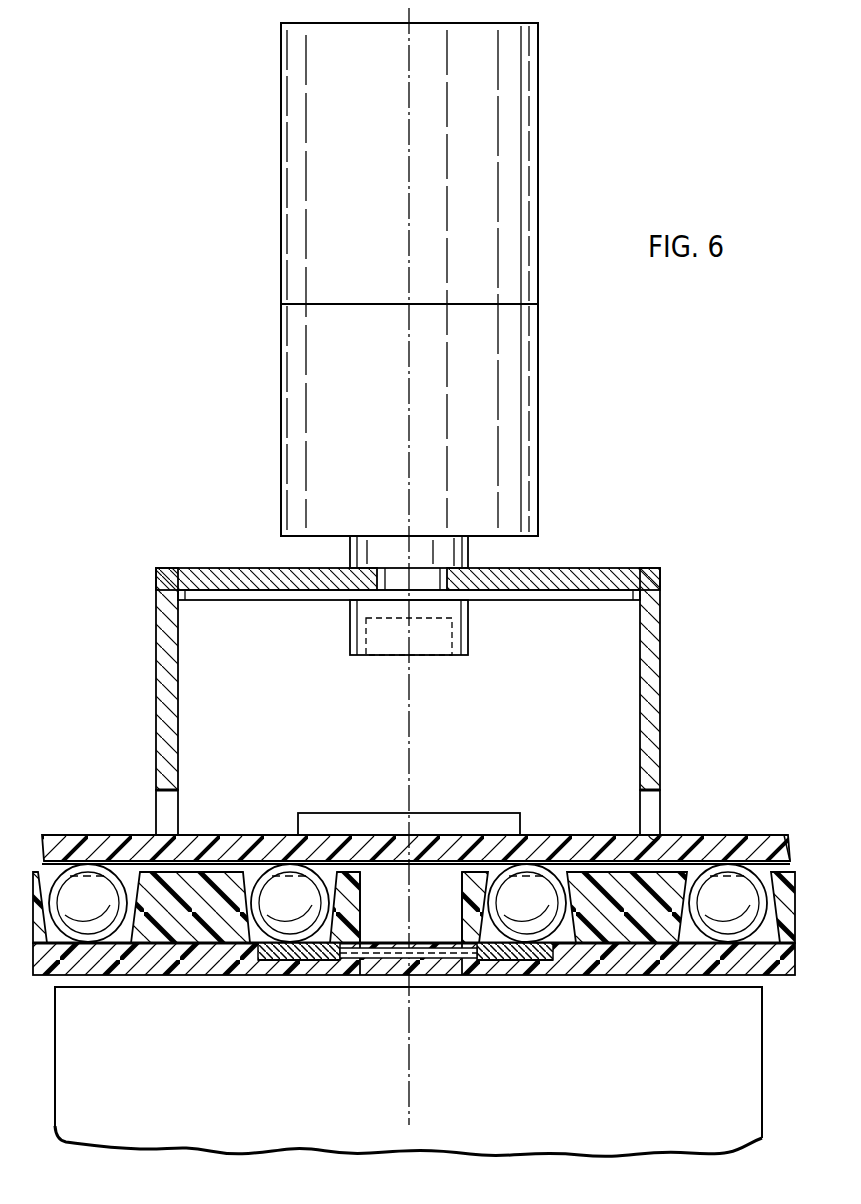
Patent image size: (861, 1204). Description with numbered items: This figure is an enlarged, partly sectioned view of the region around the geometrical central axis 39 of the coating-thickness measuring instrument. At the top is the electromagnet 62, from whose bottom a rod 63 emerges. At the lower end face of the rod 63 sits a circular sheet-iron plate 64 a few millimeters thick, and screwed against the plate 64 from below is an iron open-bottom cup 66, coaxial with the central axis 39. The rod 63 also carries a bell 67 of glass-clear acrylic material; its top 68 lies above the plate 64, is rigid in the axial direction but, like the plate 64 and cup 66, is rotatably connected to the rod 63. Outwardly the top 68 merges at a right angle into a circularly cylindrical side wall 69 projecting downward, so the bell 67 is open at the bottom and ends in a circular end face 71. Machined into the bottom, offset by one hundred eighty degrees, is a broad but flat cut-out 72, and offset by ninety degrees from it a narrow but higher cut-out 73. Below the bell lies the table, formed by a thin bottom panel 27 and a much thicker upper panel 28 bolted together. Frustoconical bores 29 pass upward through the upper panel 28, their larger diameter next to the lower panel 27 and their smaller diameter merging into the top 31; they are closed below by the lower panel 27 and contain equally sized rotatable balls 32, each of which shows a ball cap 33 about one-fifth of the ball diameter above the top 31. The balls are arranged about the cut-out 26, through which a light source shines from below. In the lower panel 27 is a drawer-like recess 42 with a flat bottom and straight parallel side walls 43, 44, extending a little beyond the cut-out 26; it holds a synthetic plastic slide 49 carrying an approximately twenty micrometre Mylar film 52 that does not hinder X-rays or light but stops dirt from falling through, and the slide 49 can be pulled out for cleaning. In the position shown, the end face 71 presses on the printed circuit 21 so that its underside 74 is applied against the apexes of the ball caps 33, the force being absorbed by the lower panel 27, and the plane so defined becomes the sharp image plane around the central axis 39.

The electromagnet 62 is at (281, 206).
The rod 63 is at (460, 554).
The plate 64 is at (571, 601).
The open-bottom cup 66 is at (352, 631).
The bell 67 is at (150, 598).
The top 68 is at (236, 578).
The circularly cylindrical side wall 69 is at (648, 666).
The geometrical central axis 39 is at (412, 718).
The cut-out 72 is at (453, 813).
The cut-out 73 is at (167, 812).
The circular end face 71 is at (664, 845).
The printed circuit 21 is at (752, 848).
The underside 74 is at (780, 846).
The cut-out 26 is at (365, 890).
The upper panel 28 is at (152, 893).
The top 31 is at (254, 864).
The balls 32 is at (88, 890).
The ball cap 33 is at (72, 870).
The bottom panel 27 is at (185, 962).
The frustoconical bores 29 is at (140, 944).
The side wall 43 is at (262, 961).
The drawer-like recess 42 is at (300, 962).
The film 52 is at (384, 960).
The slide 49 is at (520, 961).
The side wall 44 is at (558, 961).